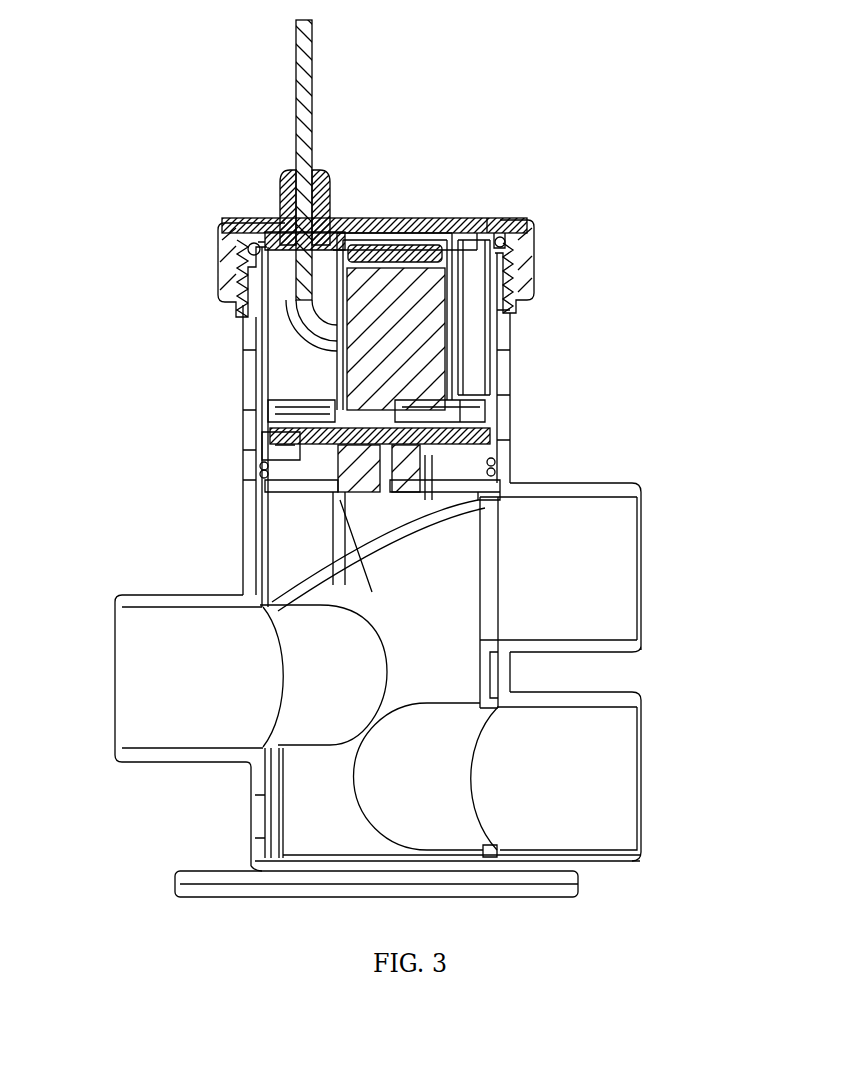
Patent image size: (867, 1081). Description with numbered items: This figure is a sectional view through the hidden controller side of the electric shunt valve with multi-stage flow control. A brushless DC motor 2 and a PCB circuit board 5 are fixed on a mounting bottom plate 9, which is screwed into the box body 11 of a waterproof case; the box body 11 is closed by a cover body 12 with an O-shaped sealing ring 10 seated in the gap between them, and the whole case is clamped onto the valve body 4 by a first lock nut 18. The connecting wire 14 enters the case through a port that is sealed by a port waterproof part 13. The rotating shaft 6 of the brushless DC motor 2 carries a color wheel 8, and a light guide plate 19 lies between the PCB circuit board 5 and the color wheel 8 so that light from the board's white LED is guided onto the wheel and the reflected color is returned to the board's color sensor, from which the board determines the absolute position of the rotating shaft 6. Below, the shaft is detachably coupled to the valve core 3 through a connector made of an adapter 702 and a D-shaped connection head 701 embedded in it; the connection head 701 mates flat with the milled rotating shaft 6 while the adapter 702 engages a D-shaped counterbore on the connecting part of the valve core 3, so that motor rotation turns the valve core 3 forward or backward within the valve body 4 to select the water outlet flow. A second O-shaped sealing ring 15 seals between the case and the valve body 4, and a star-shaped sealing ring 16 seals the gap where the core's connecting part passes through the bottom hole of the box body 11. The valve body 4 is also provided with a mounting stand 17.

The brushless DC motor 2 is at (428, 232).
The valve core 3 is at (275, 532).
The valve body 4 is at (506, 378).
The PCB circuit board 5 is at (300, 385).
The rotating shaft 6 is at (450, 505).
The color wheel 8 is at (492, 441).
The mounting bottom plate 9 is at (497, 423).
The O-shaped sealing ring 10 is at (515, 243).
The box body 11 is at (497, 320).
The cover body 12 is at (487, 216).
The port waterproof part 13 is at (283, 181).
The connecting wire 14 is at (312, 100).
The second O-shaped sealing ring 15 is at (262, 471).
The star-shaped sealing ring 16 is at (330, 466).
The mounting stand 17 is at (577, 878).
The first lock nut 18 is at (530, 262).
The light guide plate 19 is at (262, 415).
The connection head 701 is at (423, 466).
The adapter 702 is at (262, 440).